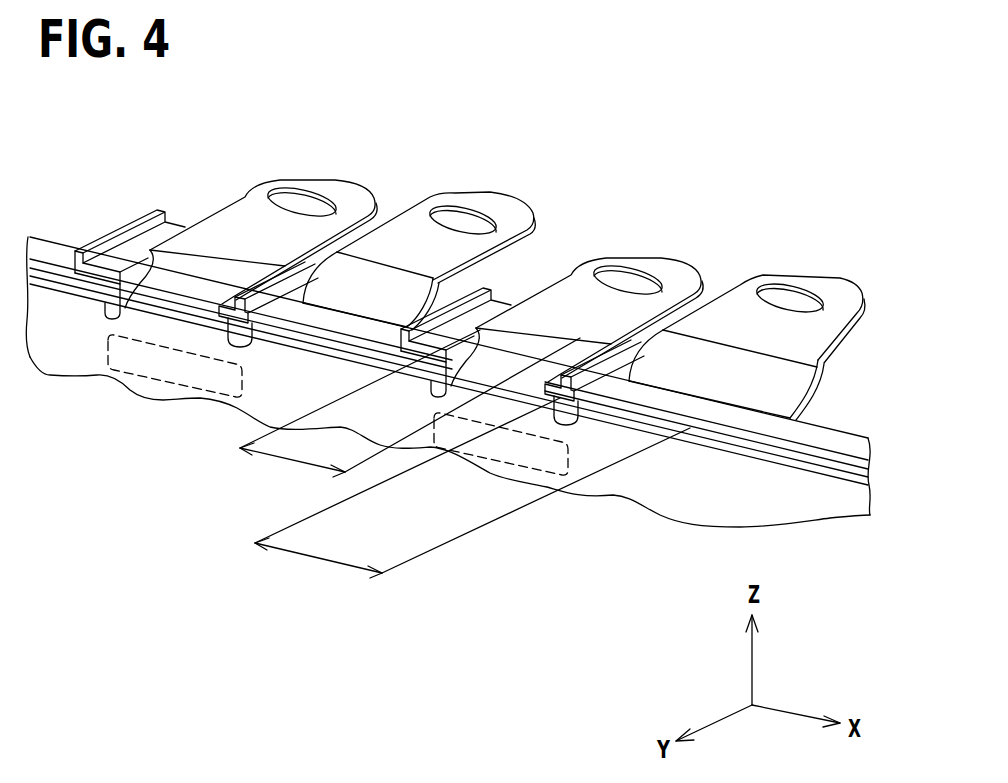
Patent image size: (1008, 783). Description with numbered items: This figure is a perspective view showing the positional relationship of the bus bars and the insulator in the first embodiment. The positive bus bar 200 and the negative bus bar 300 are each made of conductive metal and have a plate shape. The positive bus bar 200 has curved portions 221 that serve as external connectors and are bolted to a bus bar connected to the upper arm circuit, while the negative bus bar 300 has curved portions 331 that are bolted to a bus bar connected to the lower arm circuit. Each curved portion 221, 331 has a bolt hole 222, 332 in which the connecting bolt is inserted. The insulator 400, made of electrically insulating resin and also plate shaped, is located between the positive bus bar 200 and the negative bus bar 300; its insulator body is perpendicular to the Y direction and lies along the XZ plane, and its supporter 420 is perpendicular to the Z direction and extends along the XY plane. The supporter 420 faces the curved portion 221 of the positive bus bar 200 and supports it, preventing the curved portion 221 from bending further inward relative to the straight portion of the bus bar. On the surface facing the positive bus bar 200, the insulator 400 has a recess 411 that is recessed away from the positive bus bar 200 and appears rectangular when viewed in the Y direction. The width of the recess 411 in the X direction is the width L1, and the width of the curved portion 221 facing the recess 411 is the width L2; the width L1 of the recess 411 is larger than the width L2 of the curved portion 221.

The positive bus bar 200 is at (733, 484).
The curved portion 221 is at (213, 227).
The bolt hole 222 is at (314, 199).
The negative bus bar 300 is at (385, 252).
The curved portion 331 is at (416, 233).
The bolt hole 332 is at (475, 222).
The insulator 400 is at (838, 443).
The recess 411 is at (157, 358).
The supporter 420 is at (288, 268).
The width of the recess L1 is at (472, 494).
The width of the curved portion L2 is at (410, 414).